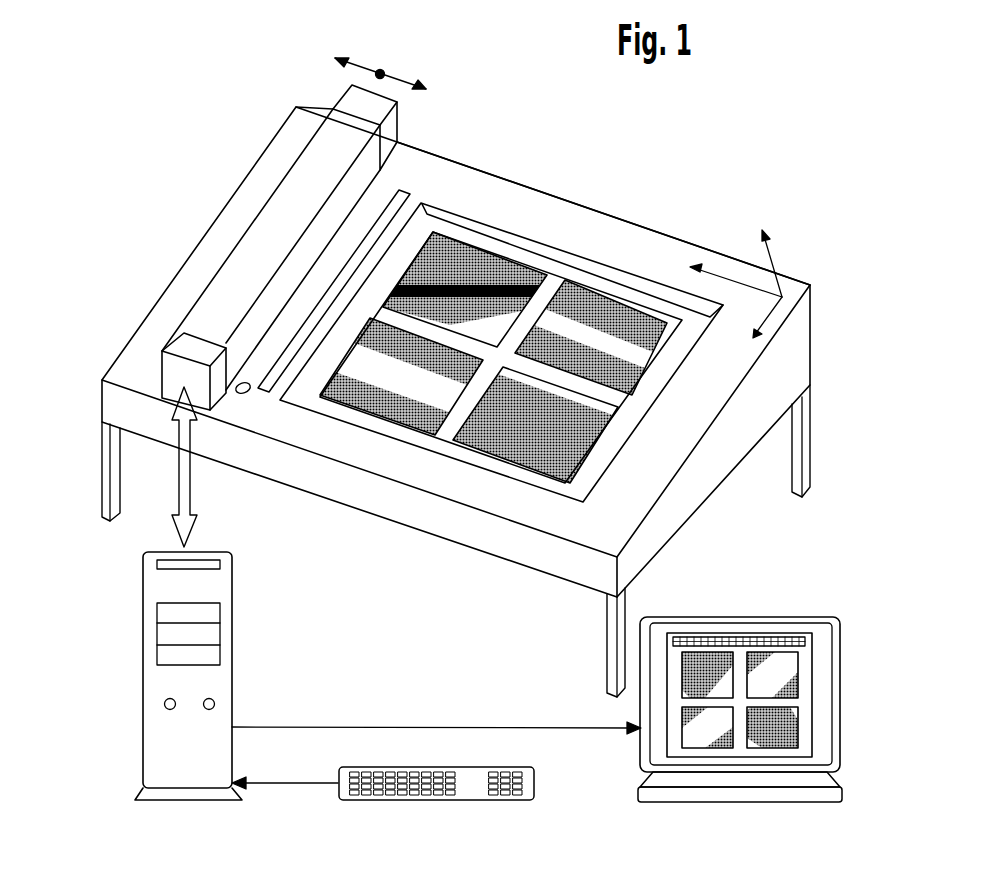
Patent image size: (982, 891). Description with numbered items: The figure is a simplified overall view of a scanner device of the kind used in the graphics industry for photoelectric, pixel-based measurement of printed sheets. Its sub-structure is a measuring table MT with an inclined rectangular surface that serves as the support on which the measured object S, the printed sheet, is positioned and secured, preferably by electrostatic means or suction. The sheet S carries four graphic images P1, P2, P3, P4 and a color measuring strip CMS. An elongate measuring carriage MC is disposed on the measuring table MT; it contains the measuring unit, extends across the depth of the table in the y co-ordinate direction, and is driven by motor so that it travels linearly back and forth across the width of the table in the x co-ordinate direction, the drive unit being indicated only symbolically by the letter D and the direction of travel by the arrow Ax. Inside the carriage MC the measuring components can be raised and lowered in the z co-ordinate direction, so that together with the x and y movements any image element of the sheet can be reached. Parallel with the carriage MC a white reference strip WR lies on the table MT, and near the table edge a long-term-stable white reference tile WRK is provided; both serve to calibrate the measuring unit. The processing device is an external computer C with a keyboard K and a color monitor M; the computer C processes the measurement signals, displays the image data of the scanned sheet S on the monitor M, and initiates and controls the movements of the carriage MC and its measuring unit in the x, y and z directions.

The measuring table MT is at (660, 460).
The measuring carriage MC is at (277, 222).
The arrow Ax is at (380, 74).
The drive unit D is at (183, 350).
The white reference strip WR is at (401, 190).
The white reference tile WRK is at (243, 393).
The measured object S is at (638, 398).
The color measuring strip CMS is at (523, 252).
The graphic image P1 is at (487, 253).
The graphic image P2 is at (653, 350).
The graphic image P3 is at (380, 413).
The graphic image P4 is at (548, 460).
The x co-ordinate direction x is at (728, 274).
The y co-ordinate direction y is at (761, 320).
The z co-ordinate direction z is at (776, 261).
The computer C is at (218, 592).
The keyboard K is at (531, 787).
The color monitor M is at (738, 630).